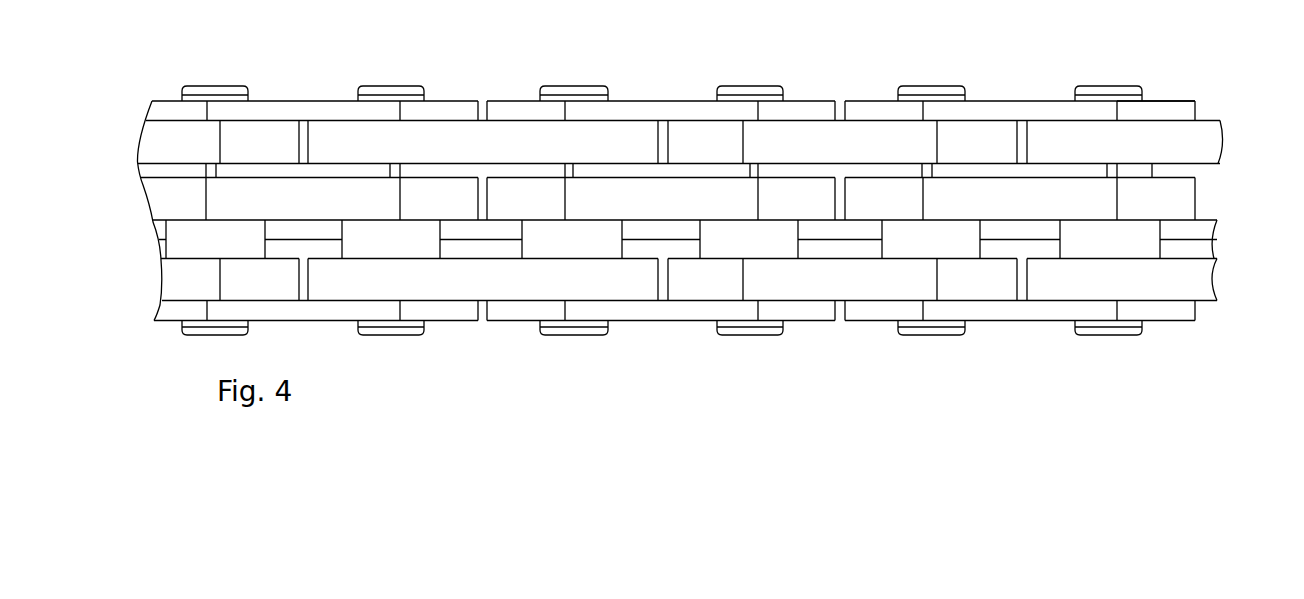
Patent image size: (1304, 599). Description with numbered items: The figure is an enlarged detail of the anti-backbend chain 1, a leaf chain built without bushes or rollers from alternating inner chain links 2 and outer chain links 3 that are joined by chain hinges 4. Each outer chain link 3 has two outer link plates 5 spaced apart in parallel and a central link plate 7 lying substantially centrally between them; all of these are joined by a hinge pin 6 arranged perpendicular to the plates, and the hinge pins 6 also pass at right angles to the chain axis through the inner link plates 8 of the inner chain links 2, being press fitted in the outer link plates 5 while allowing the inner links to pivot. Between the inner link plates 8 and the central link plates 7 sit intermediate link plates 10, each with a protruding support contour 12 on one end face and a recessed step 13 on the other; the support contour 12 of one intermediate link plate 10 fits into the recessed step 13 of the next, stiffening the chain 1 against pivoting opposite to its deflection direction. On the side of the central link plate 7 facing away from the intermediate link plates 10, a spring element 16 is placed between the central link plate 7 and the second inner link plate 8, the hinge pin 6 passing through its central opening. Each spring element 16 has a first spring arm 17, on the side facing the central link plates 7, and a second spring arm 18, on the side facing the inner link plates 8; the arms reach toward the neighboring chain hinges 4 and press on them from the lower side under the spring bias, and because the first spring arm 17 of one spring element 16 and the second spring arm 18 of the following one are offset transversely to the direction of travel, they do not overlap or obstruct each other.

The chain 1 is at (1195, 70).
The inner chain link 2 is at (1012, 106).
The outer chain link 3 is at (840, 118).
The chain hinge 4 is at (792, 96).
The outer link plate 5 is at (1190, 108).
The hinge pin 6 is at (748, 95).
The central link plate 7 is at (1177, 201).
The inner link plate 8 is at (1205, 143).
The intermediate link plate 10 is at (1075, 172).
The support contour 12 is at (970, 170).
The recessed step 13 is at (1128, 172).
The spring element 16 is at (1162, 247).
The first spring arm 17 is at (995, 232).
The second spring arm 18 is at (816, 250).